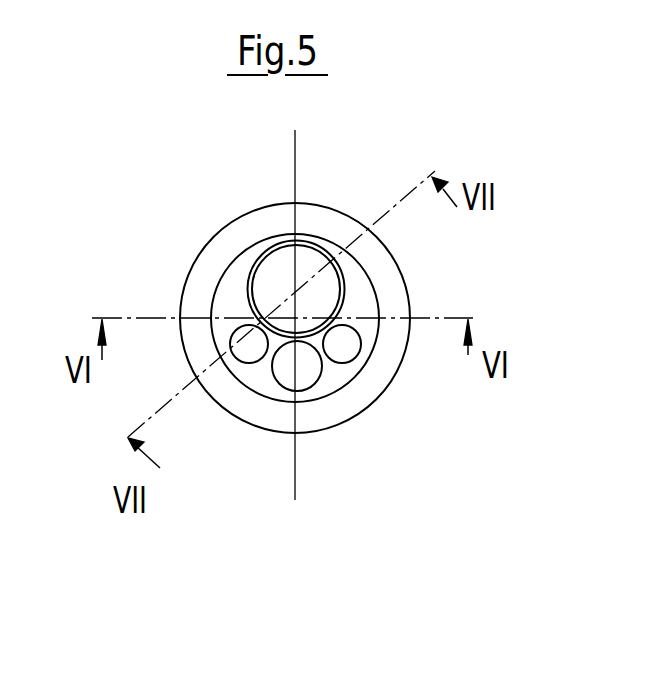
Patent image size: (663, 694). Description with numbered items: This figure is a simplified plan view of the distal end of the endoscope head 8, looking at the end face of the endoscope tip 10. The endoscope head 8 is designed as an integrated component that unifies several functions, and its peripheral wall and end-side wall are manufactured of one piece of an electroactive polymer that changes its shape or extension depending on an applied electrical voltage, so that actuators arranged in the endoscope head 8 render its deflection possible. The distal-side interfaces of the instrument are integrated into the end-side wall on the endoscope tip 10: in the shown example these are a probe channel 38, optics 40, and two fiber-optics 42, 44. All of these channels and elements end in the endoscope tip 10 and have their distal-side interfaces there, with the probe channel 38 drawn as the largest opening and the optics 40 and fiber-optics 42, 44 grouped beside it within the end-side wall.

The endoscope head 8 is at (402, 266).
The endoscope tip 10 is at (367, 298).
The probe channel 38 is at (277, 272).
The optics 40 is at (305, 378).
The fiber-optics 42 is at (247, 353).
The fiber-optics 44 is at (347, 348).